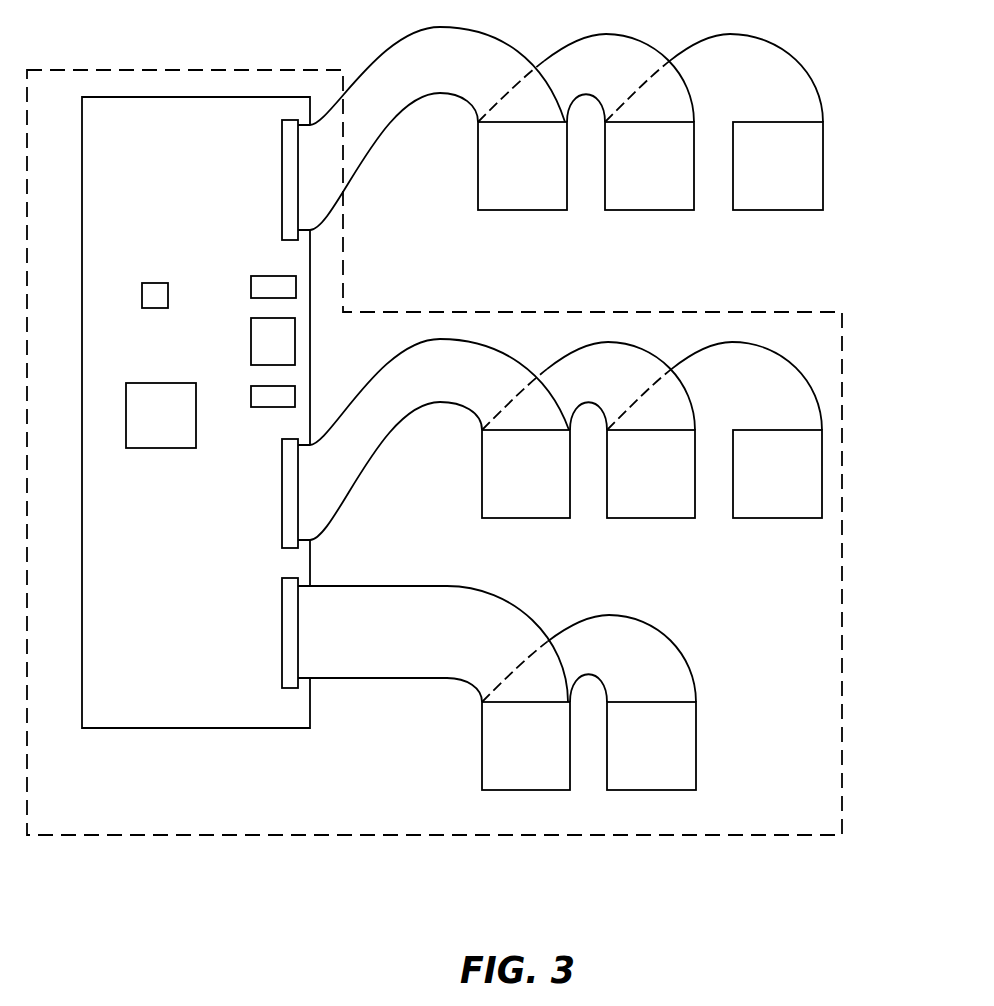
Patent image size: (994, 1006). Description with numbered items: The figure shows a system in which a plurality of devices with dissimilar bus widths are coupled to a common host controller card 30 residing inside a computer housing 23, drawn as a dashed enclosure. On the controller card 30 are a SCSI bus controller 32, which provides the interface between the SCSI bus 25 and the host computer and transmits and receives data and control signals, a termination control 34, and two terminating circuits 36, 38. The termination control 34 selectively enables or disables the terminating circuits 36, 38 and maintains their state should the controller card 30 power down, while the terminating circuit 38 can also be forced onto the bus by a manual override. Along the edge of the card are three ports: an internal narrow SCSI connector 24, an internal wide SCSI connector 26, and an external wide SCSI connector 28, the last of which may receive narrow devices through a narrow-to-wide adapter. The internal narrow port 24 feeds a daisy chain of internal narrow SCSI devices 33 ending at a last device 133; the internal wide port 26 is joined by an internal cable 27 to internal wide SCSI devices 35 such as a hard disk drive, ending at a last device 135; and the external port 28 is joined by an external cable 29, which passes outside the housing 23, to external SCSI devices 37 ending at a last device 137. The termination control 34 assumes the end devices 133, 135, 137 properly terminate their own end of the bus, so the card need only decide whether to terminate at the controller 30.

The computer housing 23 is at (842, 346).
The host controller card 30 is at (82, 489).
The external wide SCSI connector or port 28 is at (282, 167).
The internal narrow SCSI connector or port 24 is at (282, 484).
The internal wide SCSI connector or port 26 is at (282, 598).
The external cable 29 is at (155, 283).
The terminating circuit 38 is at (251, 288).
The termination control 34 is at (251, 345).
The terminating circuit 36 is at (251, 402).
The SCSI bus controller 32 is at (145, 383).
The SCSI bus 25 is at (378, 457).
The internal cable 27 is at (405, 682).
The external SCSI device 37 is at (527, 210).
The external SCSI device at end of bus 137 is at (792, 210).
The internal narrow SCSI device 33 is at (550, 518).
The internal narrow SCSI device at end of bus 133 is at (803, 518).
The internal wide SCSI device 35 is at (535, 790).
The internal wide SCSI device at end of bus 135 is at (677, 790).